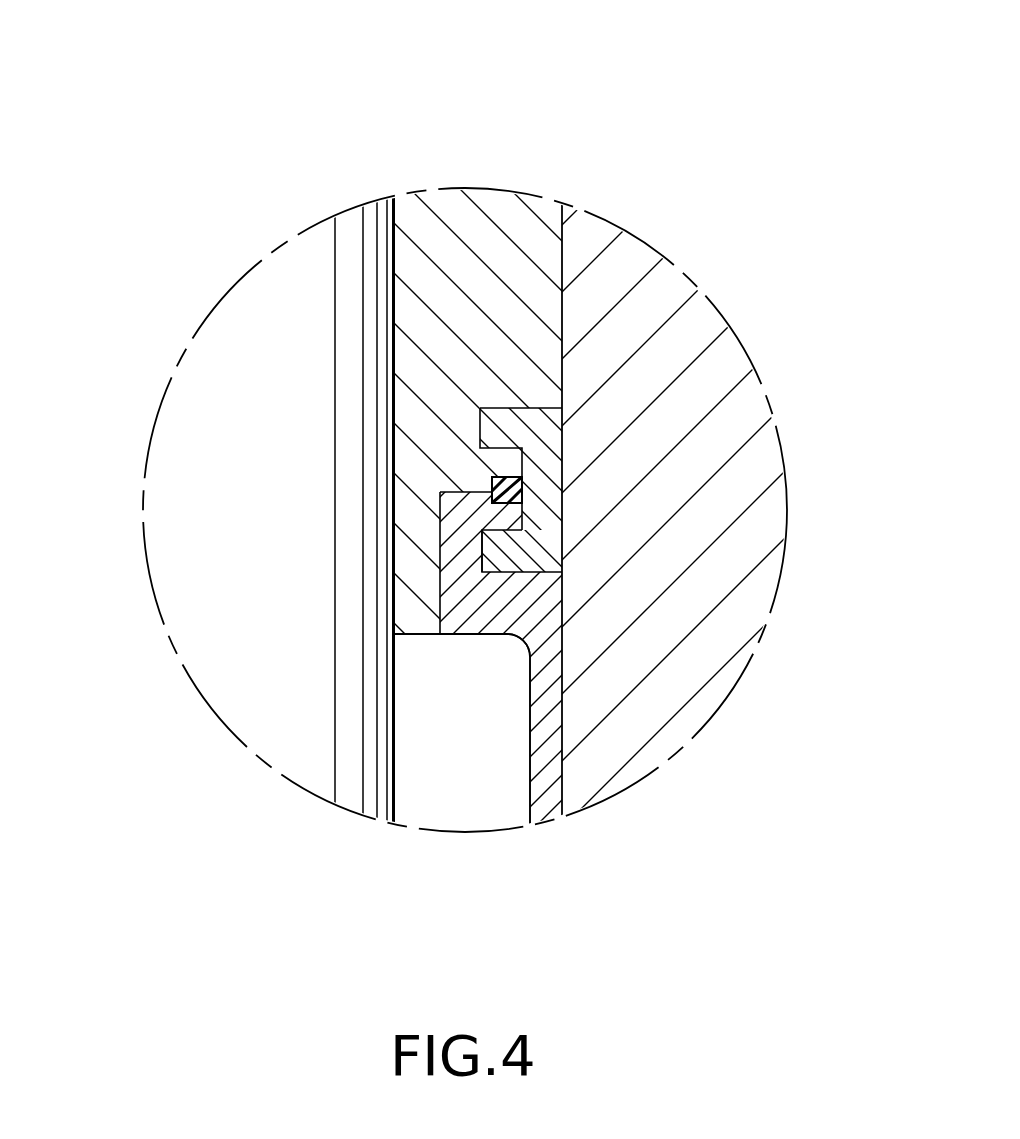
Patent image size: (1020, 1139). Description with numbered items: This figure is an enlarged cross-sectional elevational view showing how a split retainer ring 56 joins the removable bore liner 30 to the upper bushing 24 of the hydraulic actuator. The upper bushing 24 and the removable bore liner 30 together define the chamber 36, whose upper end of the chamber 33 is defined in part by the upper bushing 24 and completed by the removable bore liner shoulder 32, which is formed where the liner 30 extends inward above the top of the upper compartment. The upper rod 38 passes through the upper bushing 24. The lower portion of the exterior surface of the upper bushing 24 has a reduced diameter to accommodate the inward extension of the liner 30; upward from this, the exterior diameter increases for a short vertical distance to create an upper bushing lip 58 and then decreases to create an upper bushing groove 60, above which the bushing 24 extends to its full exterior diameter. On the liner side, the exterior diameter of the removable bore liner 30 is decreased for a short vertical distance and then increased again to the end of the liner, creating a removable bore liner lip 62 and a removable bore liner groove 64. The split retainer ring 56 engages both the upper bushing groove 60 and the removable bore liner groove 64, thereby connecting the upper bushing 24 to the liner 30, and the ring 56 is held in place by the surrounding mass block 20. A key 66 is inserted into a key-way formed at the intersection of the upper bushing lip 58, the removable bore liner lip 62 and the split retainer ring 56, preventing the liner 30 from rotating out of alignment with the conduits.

The mass block 20 is at (264, 240).
The upper bushing 24 is at (483, 212).
The removable bore liner 30 is at (548, 778).
The removable bore liner shoulder 32 is at (480, 635).
The upper end of the chamber 33 is at (415, 636).
The chamber 36 is at (474, 772).
The upper rod 38 is at (245, 638).
The split retainer ring 56 is at (562, 463).
The upper bushing lip 58 is at (562, 428).
The upper bushing groove 60 is at (480, 427).
The removable bore liner lip 62 is at (522, 515).
The removable bore liner groove 64 is at (482, 552).
The key 66 is at (522, 490).